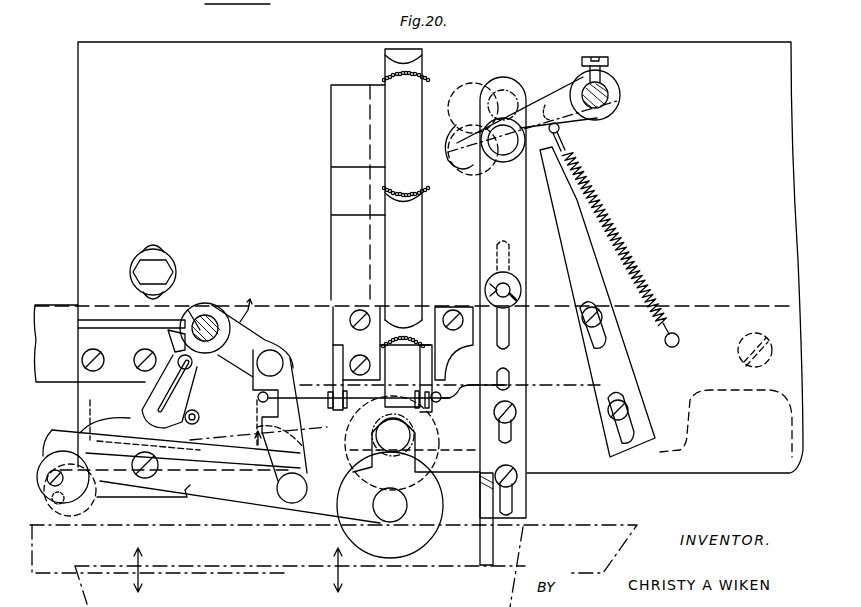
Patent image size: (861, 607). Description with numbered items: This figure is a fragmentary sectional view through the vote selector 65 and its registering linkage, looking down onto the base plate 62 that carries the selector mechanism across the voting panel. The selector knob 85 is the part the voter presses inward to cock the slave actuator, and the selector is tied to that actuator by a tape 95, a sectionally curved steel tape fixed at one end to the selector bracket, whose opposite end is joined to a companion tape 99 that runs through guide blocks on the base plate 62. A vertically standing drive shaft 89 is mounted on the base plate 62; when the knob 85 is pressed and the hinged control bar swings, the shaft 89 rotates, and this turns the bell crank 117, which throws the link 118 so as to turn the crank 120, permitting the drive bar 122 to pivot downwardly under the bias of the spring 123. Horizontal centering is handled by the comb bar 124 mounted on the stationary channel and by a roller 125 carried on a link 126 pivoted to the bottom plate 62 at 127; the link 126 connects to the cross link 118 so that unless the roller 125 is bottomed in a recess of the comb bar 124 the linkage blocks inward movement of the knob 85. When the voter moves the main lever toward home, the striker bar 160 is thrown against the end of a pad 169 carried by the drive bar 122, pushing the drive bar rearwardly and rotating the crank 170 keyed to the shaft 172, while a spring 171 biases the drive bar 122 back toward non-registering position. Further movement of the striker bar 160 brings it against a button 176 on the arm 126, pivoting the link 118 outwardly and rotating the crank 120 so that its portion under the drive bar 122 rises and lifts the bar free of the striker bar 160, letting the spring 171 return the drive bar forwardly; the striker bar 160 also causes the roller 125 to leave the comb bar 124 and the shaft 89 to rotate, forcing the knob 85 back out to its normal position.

The base plate 62 is at (726, 197).
The vote selector 65 is at (198, 1).
The selector knob 85 is at (270, 14).
The drive shaft 89 is at (210, 304).
The tape 95 is at (425, 192).
The companion tape 99 is at (384, 78).
The bell crank 117 is at (265, 338).
The link 118 is at (253, 424).
The crank 120 is at (324, 376).
The drive bar 122 is at (527, 497).
The spring 123 is at (486, 292).
The comb bar 124 is at (680, 434).
The roller 125 is at (400, 553).
The link 126 is at (262, 501).
The pivot 127 is at (148, 478).
The striker bar 160 is at (261, 598).
The pad 169 is at (495, 553).
The crank 170 is at (534, 95).
The spring 171 is at (604, 200).
The shaft 172 is at (606, 82).
The button 176 is at (55, 436).